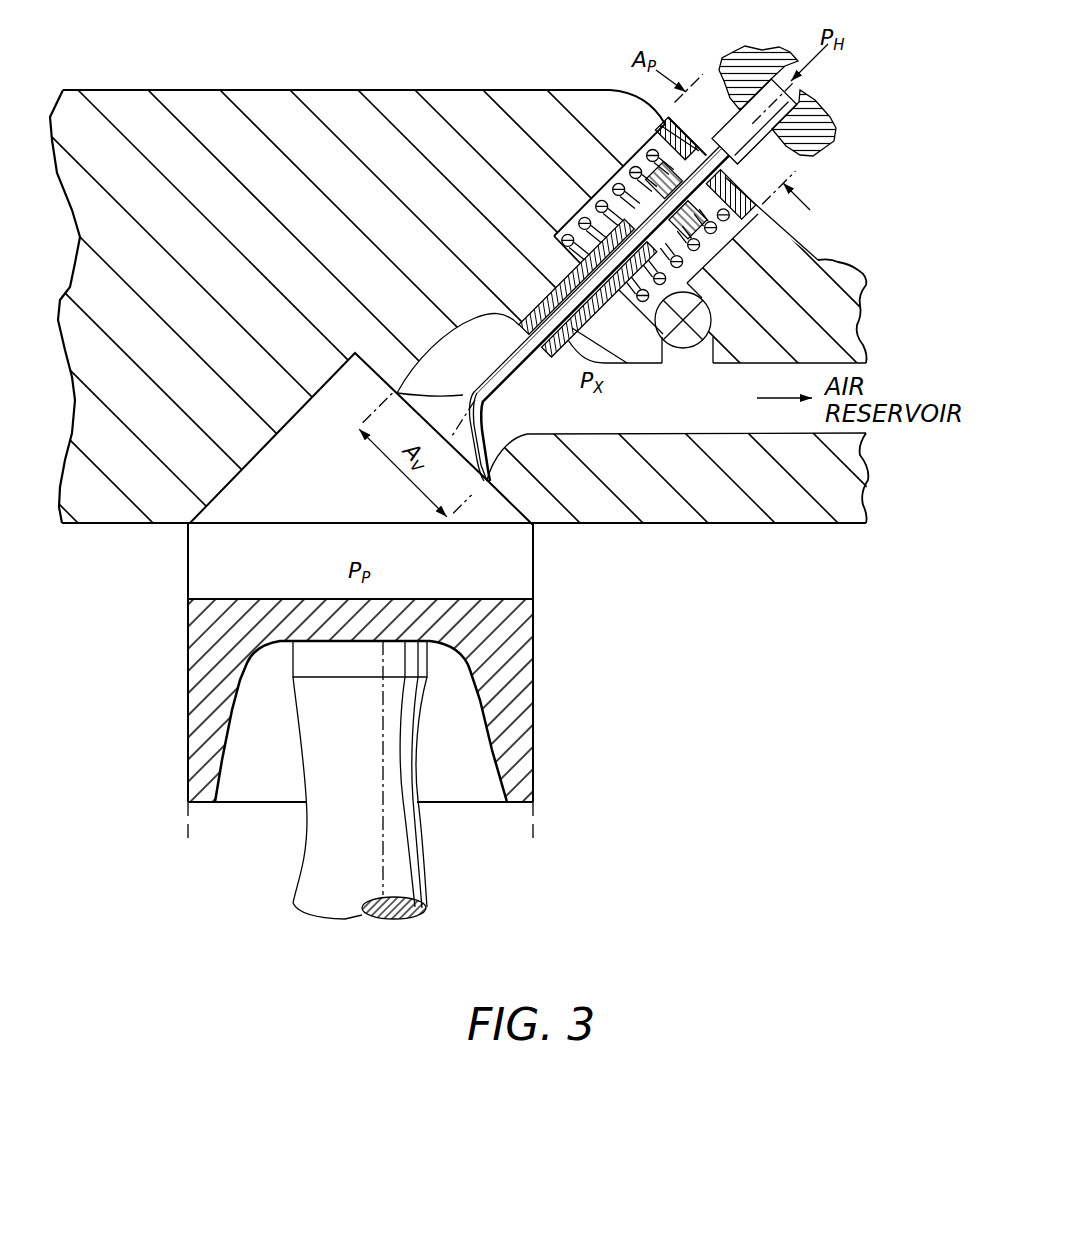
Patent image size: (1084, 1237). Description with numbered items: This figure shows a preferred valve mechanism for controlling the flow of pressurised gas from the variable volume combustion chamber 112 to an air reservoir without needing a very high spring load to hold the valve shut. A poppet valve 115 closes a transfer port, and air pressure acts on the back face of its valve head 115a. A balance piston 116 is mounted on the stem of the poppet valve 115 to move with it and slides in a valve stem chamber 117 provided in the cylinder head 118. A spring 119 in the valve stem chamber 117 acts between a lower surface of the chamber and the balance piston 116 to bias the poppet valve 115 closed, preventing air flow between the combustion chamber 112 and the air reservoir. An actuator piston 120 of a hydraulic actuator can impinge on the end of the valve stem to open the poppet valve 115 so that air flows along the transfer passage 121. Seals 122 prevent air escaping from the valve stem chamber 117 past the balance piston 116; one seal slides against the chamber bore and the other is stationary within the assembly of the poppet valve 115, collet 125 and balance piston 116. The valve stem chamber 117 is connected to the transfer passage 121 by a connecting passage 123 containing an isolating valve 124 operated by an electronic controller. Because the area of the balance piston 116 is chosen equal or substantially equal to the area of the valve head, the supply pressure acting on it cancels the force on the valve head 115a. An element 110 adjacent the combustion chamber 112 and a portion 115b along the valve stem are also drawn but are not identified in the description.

The piston 110 is at (532, 699).
The combustion chamber 112 is at (442, 568).
The poppet valve 115 is at (400, 416).
The valve head 115a is at (463, 432).
The valve guide 115b is at (557, 303).
The balance piston 116 is at (683, 125).
The valve stem chamber 117 is at (585, 212).
The cylinder head 118 is at (266, 102).
The spring 119 is at (702, 247).
The actuator piston 120 is at (811, 86).
The transfer passage 121 is at (730, 410).
The seals 122 is at (658, 124).
The connecting passage 123 is at (688, 354).
The isolating valve 124 is at (711, 320).
The collet 125 is at (731, 172).